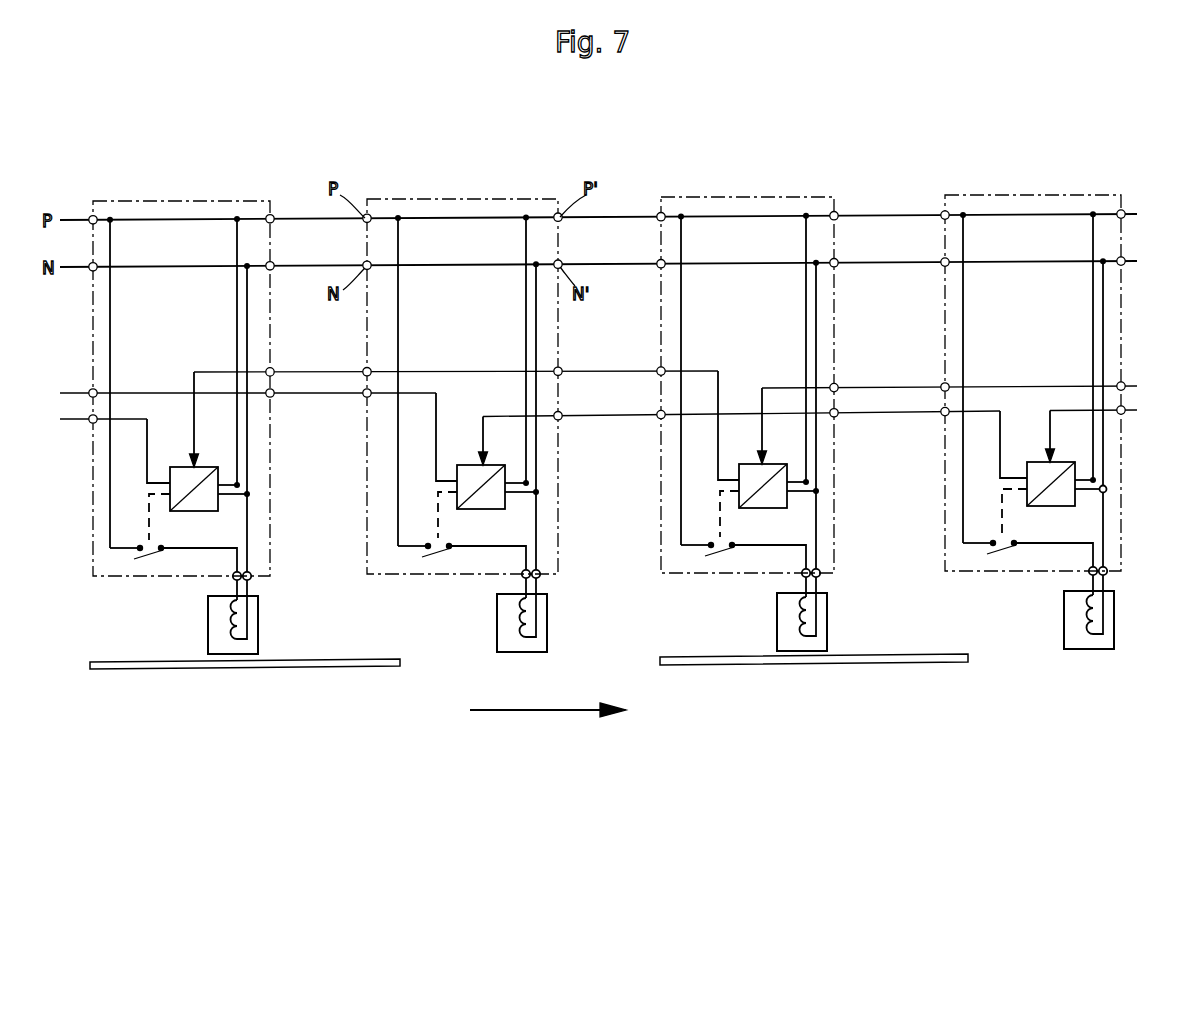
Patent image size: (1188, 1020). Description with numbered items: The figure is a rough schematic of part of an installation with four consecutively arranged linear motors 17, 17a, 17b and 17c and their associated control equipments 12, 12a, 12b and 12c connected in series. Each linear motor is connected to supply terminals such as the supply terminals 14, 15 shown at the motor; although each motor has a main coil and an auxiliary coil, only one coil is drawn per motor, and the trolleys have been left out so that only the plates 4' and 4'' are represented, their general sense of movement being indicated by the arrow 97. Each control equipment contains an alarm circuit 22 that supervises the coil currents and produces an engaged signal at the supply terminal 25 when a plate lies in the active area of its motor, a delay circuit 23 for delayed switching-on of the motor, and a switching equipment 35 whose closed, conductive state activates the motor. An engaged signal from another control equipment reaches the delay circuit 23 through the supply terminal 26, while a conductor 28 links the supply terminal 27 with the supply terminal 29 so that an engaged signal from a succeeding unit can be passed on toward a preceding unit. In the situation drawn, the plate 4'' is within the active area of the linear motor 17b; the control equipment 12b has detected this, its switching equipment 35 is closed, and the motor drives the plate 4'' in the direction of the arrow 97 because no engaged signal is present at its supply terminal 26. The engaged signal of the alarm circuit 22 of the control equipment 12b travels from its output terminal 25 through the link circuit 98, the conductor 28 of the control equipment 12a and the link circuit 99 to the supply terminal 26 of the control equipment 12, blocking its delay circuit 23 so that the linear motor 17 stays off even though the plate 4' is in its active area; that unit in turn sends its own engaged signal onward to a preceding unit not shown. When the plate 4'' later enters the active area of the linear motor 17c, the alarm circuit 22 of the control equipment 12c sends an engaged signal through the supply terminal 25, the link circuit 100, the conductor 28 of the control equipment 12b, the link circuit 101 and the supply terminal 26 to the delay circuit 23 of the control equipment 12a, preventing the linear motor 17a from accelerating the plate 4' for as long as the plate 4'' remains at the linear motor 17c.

The control equipment 12 is at (183, 201).
The control equipment 12a is at (443, 199).
The control equipment 12b is at (733, 197).
The control equipment 12c is at (1023, 195).
The supply terminal 14 is at (525, 579).
The supply terminal 15 is at (538, 579).
The linear motor 17 is at (258, 640).
The linear motor 17a is at (547, 638).
The linear motor 17b is at (827, 637).
The linear motor 17c is at (1114, 635).
The alarm circuit 22 is at (197, 505).
The delay circuit 23 is at (185, 475).
The supply terminal 25 is at (93, 423).
The supply terminal 26 is at (272, 372).
The supply terminal 27 is at (365, 372).
The conductor 28 is at (148, 392).
The supply terminal 29 is at (560, 371).
The switching equipment 35 is at (155, 560).
The arrow 97 is at (540, 713).
The link circuit 98 is at (600, 371).
The link circuit 99 is at (314, 372).
The link circuit 100 is at (877, 412).
The link circuit 101 is at (605, 415).
The plate 4' is at (245, 689).
The plate 4'' is at (814, 684).